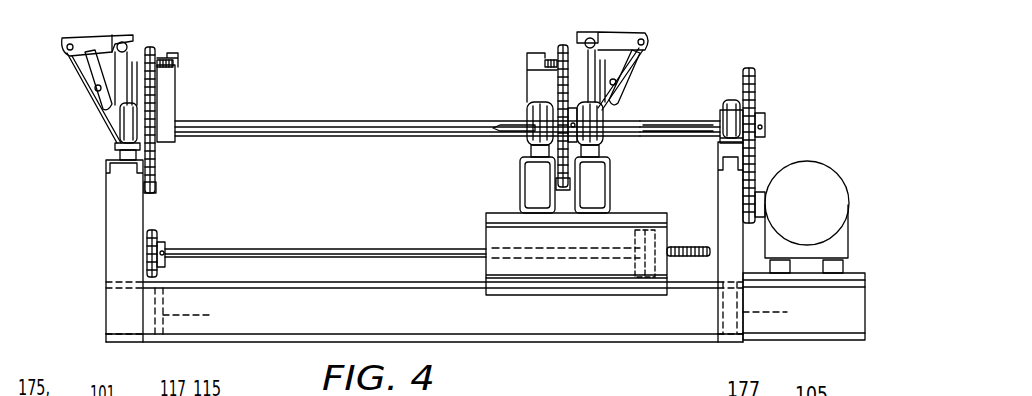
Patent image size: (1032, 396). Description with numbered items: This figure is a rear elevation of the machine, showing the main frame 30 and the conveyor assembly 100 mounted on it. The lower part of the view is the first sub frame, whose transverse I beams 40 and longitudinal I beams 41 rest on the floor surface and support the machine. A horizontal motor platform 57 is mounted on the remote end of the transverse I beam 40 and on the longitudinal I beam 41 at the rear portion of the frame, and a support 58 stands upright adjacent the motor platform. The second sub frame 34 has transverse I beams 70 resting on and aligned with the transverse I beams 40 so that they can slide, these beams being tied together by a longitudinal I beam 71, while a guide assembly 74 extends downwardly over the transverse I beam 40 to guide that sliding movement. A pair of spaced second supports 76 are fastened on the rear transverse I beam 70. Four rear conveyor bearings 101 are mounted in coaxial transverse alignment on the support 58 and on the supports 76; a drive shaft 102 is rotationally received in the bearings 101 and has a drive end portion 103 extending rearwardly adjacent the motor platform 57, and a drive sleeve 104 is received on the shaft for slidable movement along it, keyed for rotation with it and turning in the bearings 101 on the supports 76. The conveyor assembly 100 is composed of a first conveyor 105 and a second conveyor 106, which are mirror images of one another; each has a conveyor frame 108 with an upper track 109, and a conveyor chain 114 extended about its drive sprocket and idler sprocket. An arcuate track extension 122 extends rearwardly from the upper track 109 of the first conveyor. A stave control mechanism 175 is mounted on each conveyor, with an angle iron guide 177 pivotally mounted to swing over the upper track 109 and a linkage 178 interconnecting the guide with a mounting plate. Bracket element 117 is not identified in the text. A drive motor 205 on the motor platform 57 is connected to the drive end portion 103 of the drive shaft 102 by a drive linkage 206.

The main frame 30 is at (265, 278).
The transverse I beam 40 is at (380, 303).
The longitudinal I beam 41 is at (481, 308).
The second sub frame 34 is at (517, 157).
The horizontal motor platform 57 is at (860, 273).
The support 58 is at (718, 200).
The transverse I beam 70 is at (497, 240).
The longitudinal I beam 71 is at (660, 295).
The guide assembly 74 is at (525, 292).
The second support 76 is at (520, 185).
The conveyor assembly 100 is at (507, 46).
The rear conveyor bearing 101 is at (128, 127).
The drive shaft 102 is at (365, 128).
The drive end portion 103 is at (707, 128).
The drive sleeve 104 is at (540, 100).
The first conveyor 105 is at (180, 46).
The second conveyor 106 is at (548, 34).
The conveyor frame 108 is at (180, 70).
The upper track 109 is at (187, 62).
The conveyor chain 114 is at (148, 182).
The drive chain 117 is at (150, 47).
The arcuate track extension 122 is at (165, 105).
The stave control mechanism 175 is at (82, 31).
The angle iron guide 177 is at (113, 58).
The linkage 178 is at (80, 72).
The drive motor 205 is at (825, 195).
The drive linkage 206 is at (756, 145).